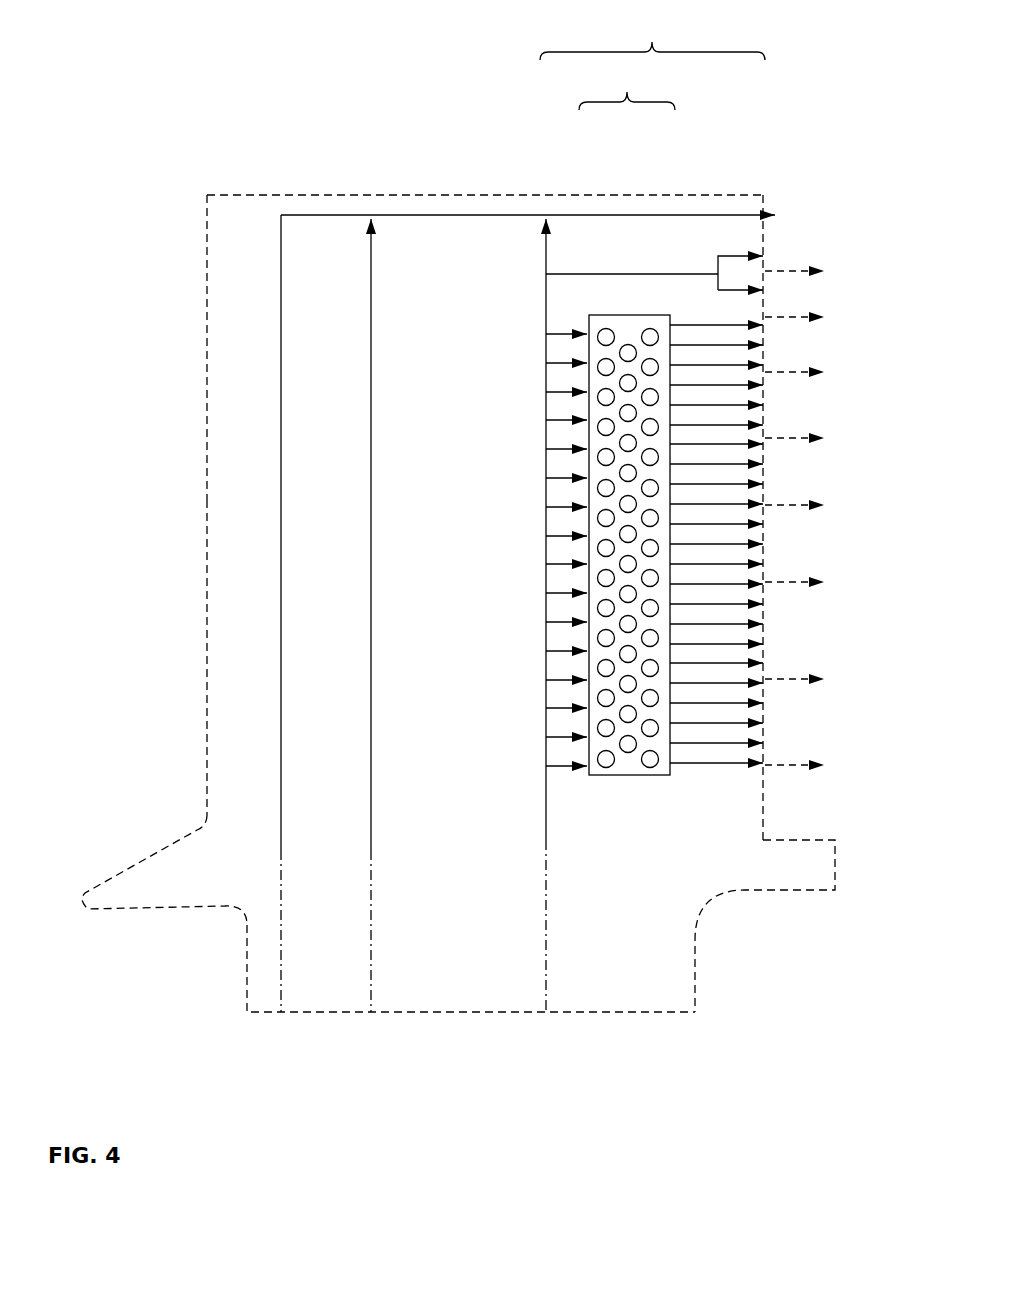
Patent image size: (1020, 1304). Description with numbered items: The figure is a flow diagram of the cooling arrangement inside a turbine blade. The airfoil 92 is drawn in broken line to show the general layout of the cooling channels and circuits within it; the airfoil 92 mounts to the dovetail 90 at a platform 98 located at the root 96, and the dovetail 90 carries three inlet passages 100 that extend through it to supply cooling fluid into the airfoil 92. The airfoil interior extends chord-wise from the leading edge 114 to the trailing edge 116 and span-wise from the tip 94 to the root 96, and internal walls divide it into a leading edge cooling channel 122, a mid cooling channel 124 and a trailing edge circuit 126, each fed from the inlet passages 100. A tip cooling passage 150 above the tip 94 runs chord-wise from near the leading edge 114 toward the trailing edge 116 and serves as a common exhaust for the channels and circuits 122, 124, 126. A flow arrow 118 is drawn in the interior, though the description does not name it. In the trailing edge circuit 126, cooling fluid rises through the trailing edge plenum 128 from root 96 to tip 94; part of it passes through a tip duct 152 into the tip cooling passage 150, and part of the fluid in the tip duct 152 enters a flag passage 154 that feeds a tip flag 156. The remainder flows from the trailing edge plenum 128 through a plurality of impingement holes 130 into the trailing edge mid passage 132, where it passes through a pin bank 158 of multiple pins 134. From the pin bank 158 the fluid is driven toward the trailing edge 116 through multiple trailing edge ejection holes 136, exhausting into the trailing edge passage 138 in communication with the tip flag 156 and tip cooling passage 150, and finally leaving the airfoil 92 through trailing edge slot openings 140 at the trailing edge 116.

The dovetail 90 is at (244, 966).
The airfoil 92 is at (203, 216).
The tip 94 is at (230, 194).
The root 96 is at (764, 828).
The platform 98 is at (107, 866).
The inlet passage 100 is at (282, 965).
The leading edge 114 is at (205, 338).
The trailing edge 116 is at (765, 290).
The flow direction 118 is at (249, 456).
The leading edge cooling channel 122 is at (281, 670).
The mid cooling channel 124 is at (371, 598).
The trailing edge circuit 126 is at (652, 33).
The trailing edge plenum 128 is at (546, 810).
The impingement holes 130 is at (556, 420).
The trailing edge mid passage 132 is at (598, 776).
The pins 134 is at (609, 766).
The trailing edge ejection holes 136 is at (719, 256).
The trailing edge passage 138 is at (764, 738).
The trailing edge slot opening 140 is at (770, 268).
The tip cooling passage 150 is at (447, 215).
The tip duct 152 is at (546, 262).
The flag passage 154 is at (620, 274).
The tip flag 156 is at (752, 245).
The pin bank 158 is at (627, 87).